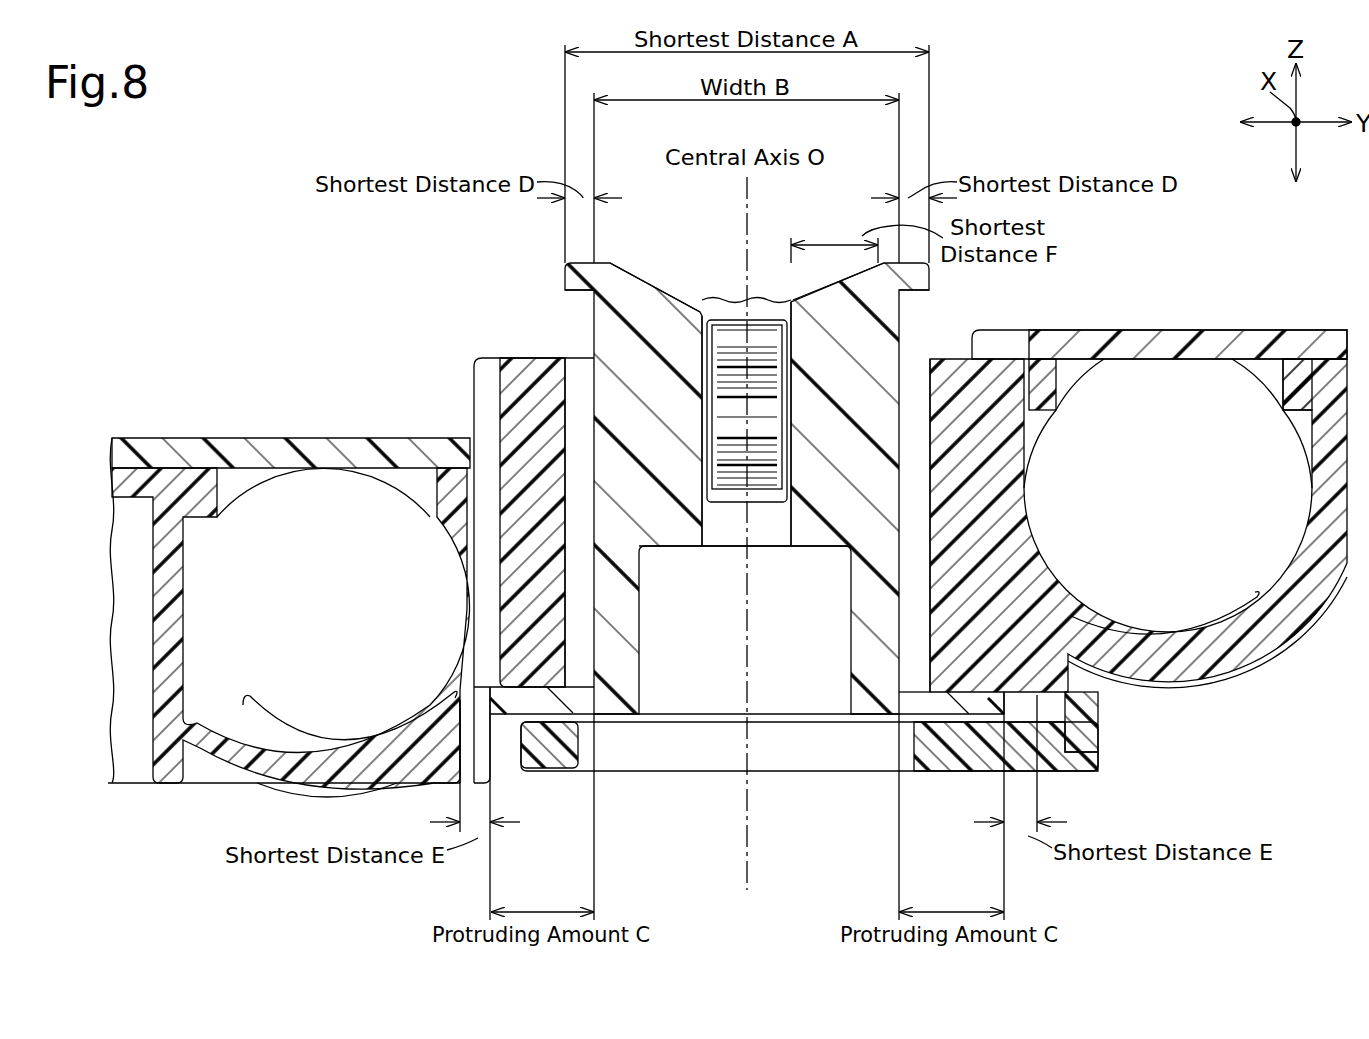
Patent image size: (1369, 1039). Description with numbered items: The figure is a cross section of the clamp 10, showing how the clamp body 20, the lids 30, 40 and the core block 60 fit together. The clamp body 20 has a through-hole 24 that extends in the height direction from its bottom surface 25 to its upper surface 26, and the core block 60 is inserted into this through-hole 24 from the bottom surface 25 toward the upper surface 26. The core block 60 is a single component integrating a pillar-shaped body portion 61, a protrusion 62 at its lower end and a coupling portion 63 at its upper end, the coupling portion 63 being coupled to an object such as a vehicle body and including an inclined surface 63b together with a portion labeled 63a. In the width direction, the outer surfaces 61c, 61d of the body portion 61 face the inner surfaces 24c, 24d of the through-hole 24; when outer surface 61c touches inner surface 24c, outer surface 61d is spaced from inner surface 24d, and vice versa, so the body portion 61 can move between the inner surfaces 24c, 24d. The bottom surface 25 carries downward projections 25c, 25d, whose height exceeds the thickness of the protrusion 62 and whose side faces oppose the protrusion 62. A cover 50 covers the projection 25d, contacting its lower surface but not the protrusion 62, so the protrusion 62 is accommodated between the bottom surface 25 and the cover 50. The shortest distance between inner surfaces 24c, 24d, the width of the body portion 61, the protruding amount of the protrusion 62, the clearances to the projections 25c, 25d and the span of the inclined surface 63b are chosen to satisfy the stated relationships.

The clamp 10 is at (1108, 247).
The clamp body 20 is at (175, 783).
The through-hole 24 is at (563, 388).
The inner surface 24c is at (567, 590).
The inner surface 24d is at (919, 490).
The bottom surface 25 is at (521, 755).
The projection 25c is at (443, 782).
The projection 25d is at (1048, 710).
The upper surface 26 is at (522, 358).
The lid 30 is at (1193, 330).
The lid 40 is at (315, 438).
The cover 50 is at (1098, 755).
The core block 60 is at (815, 546).
The body portion 61 is at (870, 302).
The outer surface 61c is at (704, 462).
The outer surface 61d is at (906, 448).
The protrusion 62 is at (550, 707).
The coupling portion 63 is at (918, 278).
The opening of light shielding portion 63a is at (720, 300).
The inclined surface 63b is at (812, 285).